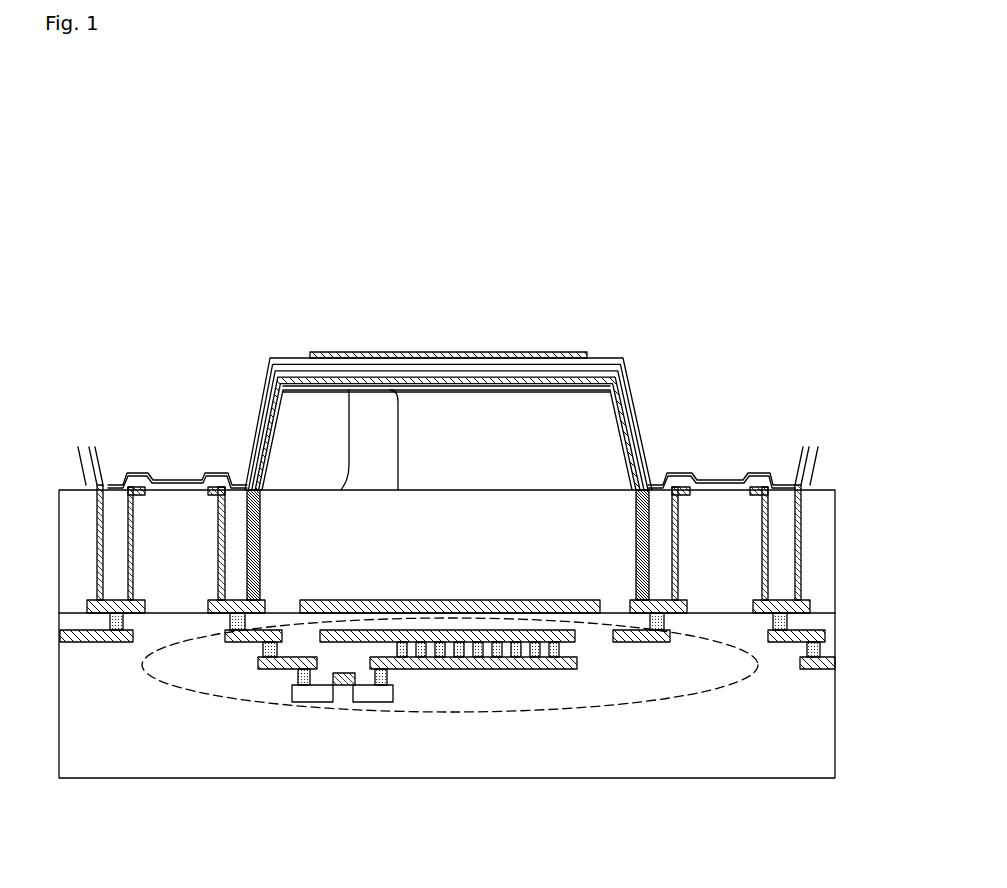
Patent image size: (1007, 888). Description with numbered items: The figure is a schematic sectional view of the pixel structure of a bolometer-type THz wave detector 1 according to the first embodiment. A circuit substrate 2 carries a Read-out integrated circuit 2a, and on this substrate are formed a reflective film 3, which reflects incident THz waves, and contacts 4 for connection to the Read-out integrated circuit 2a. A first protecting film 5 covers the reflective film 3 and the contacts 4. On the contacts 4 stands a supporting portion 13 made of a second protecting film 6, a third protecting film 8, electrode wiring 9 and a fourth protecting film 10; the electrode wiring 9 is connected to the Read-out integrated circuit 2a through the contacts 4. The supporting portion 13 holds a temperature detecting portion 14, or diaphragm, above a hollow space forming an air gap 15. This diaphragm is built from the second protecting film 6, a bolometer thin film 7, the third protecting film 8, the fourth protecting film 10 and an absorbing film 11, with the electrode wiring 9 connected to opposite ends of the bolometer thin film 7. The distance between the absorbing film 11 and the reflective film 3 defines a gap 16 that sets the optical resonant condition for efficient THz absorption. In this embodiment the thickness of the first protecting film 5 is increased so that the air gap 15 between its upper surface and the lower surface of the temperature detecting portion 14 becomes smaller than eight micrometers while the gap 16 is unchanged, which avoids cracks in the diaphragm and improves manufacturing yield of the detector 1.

The bolometer-type THz wave detector 1 is at (676, 118).
The circuit substrate 2 is at (155, 702).
The Read-out integrated circuit 2a is at (363, 710).
The reflective film 3 is at (517, 548).
The contacts 4 is at (207, 495).
The first protecting film 5 is at (640, 442).
The second protecting film 6 is at (623, 357).
The bolometer thin film 7 is at (553, 352).
The third protecting film 8 is at (520, 352).
The electrode wiring 9 is at (267, 408).
The fourth protecting film 10 is at (485, 352).
The absorbing film 11 is at (450, 352).
The supporting portion 13 is at (643, 405).
The temperature detecting portion 14 is at (424, 393).
The air gap 15 is at (398, 434).
The gap 16 is at (347, 493).